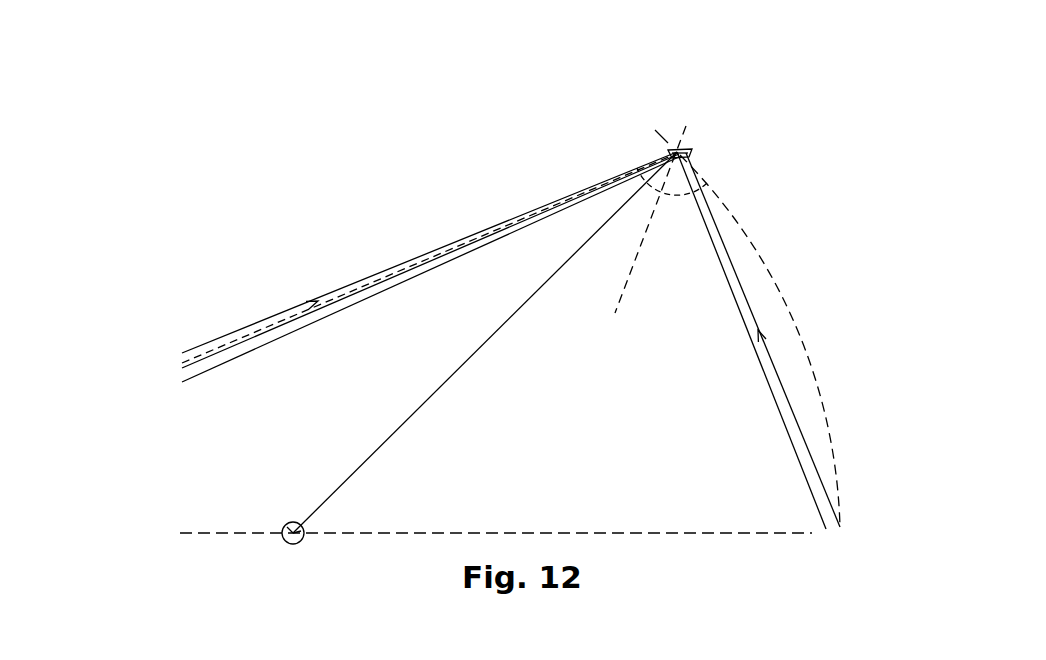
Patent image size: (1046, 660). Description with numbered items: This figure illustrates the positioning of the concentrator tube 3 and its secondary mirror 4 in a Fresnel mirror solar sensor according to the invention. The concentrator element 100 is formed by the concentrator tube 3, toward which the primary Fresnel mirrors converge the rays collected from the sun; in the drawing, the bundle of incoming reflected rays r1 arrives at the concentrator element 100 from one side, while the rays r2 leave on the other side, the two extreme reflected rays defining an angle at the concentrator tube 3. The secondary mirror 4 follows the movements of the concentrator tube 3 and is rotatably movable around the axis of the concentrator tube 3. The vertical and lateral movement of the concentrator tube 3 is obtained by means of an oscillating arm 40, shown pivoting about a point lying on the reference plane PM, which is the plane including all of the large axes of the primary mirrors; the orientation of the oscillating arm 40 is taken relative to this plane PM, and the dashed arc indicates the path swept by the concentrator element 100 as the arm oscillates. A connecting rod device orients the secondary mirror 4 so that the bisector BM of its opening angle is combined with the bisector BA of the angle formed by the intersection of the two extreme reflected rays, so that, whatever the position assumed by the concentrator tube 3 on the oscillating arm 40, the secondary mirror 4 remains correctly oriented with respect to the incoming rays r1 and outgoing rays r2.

The concentrator element 100 is at (678, 151).
The concentrator tube 3 is at (705, 140).
The secondary mirror 4 is at (690, 153).
The oscillating arm 40 is at (430, 398).
The incident beam r1 is at (290, 308).
The reflected beam r2 is at (748, 318).
The bisector of the opening angle of the secondary mirror BM is at (662, 203).
The bisector of the angle formed by the two extreme reflected rays BA is at (630, 282).
The pivot plane PM is at (213, 534).